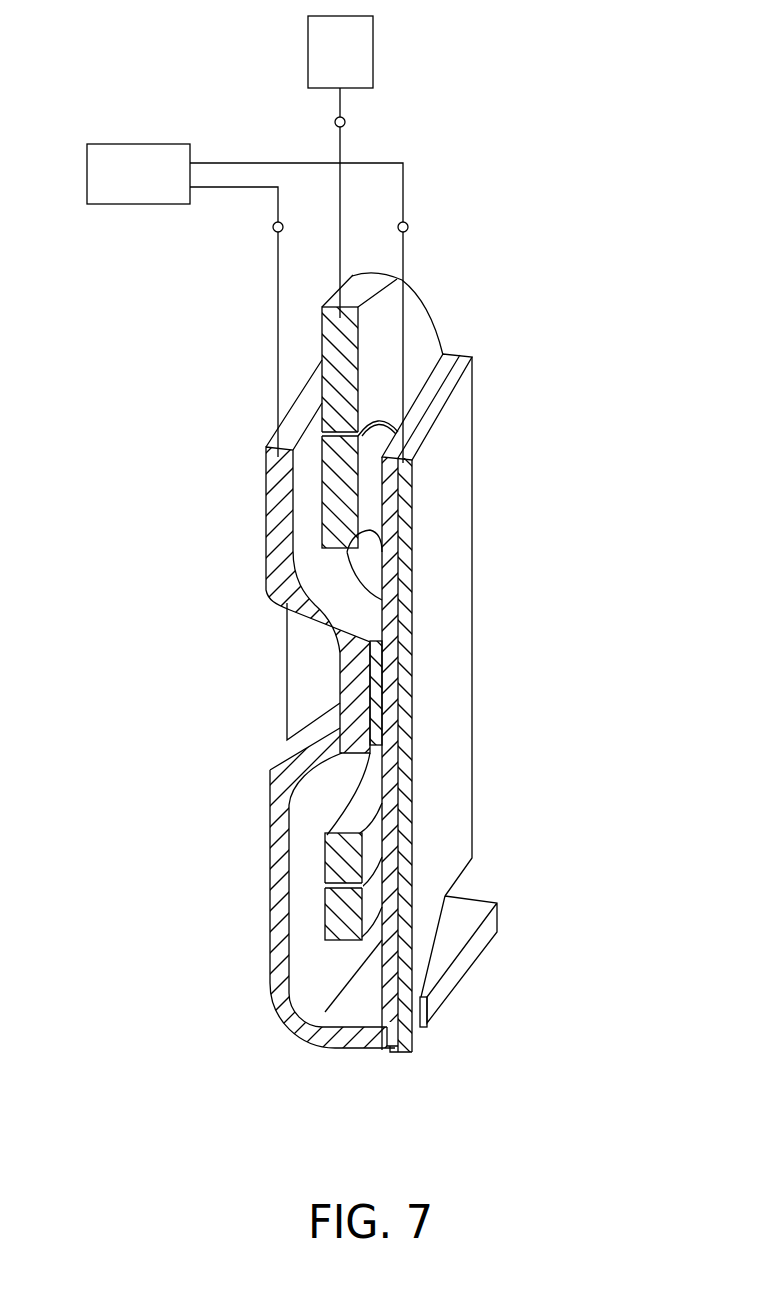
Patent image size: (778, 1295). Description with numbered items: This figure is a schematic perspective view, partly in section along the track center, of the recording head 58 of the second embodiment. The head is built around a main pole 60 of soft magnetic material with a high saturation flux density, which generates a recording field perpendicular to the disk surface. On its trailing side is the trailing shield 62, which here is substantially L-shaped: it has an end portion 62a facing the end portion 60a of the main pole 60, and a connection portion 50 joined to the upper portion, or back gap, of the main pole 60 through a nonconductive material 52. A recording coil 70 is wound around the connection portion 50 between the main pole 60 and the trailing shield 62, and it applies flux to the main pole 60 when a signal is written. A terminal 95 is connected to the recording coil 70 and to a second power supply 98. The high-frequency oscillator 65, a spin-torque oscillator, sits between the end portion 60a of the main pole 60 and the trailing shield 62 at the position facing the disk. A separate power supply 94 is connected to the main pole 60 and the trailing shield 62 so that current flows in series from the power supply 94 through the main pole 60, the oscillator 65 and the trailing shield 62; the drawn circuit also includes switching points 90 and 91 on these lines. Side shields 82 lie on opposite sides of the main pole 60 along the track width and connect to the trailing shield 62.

The second power supply 98 is at (373, 30).
The power supply 94 is at (164, 143).
The terminal 95 is at (335, 122).
The switch 90 is at (408, 226).
The switch 91 is at (273, 227).
The recording head 58 is at (542, 543).
The main pole 60 is at (437, 745).
The end portion of the main pole 60a is at (418, 1040).
The side shields 82 is at (472, 938).
The recording coil 70 is at (322, 326).
The trailing shield 62 is at (389, 700).
The end portion of the trailing shield 62a is at (309, 1032).
The high-frequency oscillator 65 is at (398, 1053).
The nonconductive material 52 is at (368, 660).
The connection portion 50 is at (350, 693).